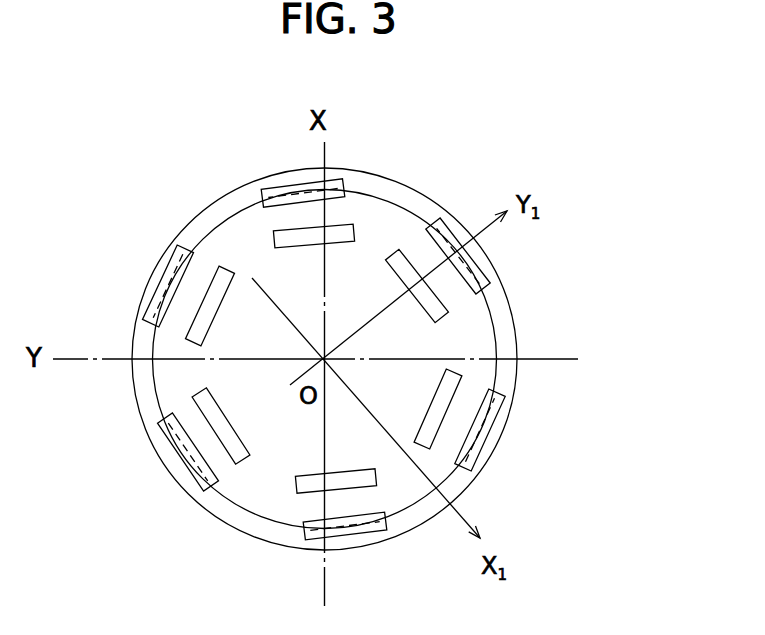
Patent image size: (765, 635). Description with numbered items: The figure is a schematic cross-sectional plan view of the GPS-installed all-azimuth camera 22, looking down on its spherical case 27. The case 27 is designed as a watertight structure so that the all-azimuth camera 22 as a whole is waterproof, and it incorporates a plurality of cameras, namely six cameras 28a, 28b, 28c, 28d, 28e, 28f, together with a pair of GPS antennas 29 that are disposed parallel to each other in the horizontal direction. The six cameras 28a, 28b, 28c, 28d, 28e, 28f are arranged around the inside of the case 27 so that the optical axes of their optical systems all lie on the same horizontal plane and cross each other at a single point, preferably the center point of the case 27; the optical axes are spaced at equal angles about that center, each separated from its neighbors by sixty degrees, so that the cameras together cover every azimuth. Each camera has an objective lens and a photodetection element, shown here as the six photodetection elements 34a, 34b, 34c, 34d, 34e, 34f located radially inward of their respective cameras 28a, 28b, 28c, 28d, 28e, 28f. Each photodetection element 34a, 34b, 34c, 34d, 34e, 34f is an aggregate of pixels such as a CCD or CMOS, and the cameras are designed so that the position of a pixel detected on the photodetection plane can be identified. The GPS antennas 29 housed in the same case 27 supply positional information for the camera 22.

The GPS-installed all-azimuth camera 22 is at (425, 192).
The spherical case 27 is at (515, 337).
The GPS antennas 29 is at (494, 325).
The camera 28a is at (494, 430).
The camera 28b is at (371, 533).
The camera 28c is at (178, 462).
The camera 28d is at (170, 264).
The camera 28e is at (334, 178).
The camera 28f is at (475, 261).
The photodetection element 34a is at (462, 387).
The photodetection element 34b is at (294, 489).
The photodetection element 34c is at (203, 390).
The photodetection element 34d is at (228, 268).
The photodetection element 34e is at (357, 229).
The photodetection element 34f is at (398, 250).